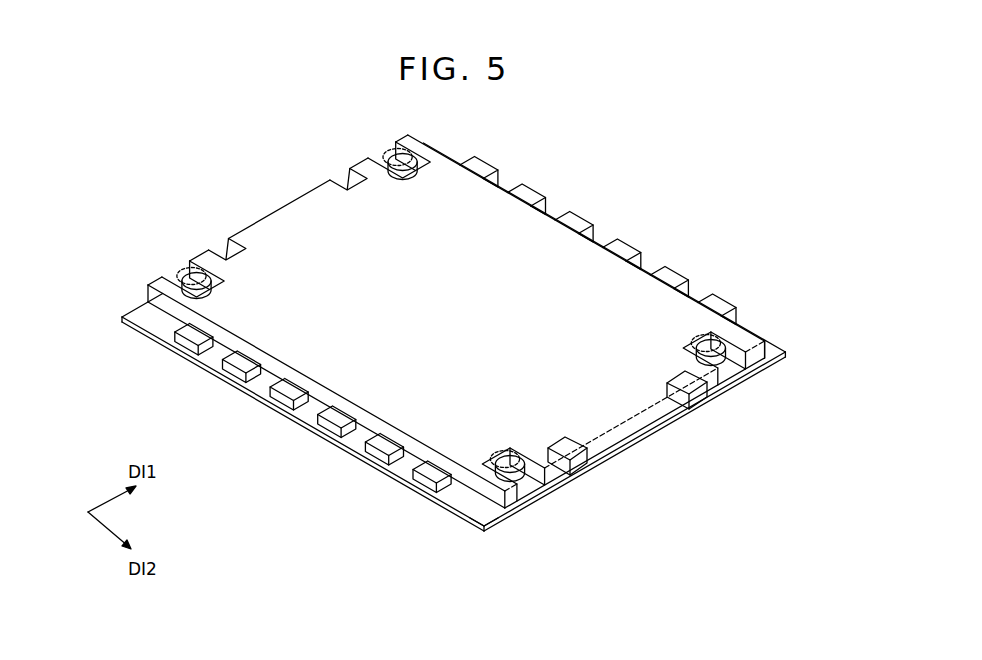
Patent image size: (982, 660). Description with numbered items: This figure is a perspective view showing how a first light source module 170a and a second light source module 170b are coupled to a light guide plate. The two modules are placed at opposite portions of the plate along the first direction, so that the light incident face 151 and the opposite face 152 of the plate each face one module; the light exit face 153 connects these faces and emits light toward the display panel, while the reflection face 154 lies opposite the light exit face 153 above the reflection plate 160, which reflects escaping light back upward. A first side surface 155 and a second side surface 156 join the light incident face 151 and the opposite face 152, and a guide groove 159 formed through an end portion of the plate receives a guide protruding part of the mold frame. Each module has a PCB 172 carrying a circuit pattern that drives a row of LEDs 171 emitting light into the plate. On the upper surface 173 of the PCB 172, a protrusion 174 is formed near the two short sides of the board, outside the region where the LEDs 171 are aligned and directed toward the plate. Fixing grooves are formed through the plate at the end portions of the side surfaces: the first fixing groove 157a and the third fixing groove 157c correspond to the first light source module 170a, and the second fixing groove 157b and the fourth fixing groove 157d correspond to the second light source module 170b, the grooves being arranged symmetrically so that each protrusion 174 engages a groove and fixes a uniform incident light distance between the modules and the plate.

The light incident face 151 is at (503, 510).
The opposite face 152 is at (600, 243).
The light exit face 153 is at (610, 303).
The reflection face 154 is at (620, 447).
The first side surface 155 is at (657, 413).
The second side surface 156 is at (273, 212).
The first fixing groove 157a is at (542, 497).
The second fixing groove 157b is at (738, 382).
The third fixing groove 157c is at (182, 268).
The fourth fixing groove 157d is at (381, 155).
The guide groove 159 is at (702, 398).
The reflection plate 160 is at (577, 473).
The first light source module 170a is at (462, 525).
The second light source module 170b is at (773, 367).
The LED 171 is at (190, 342).
The PCB 172 is at (230, 385).
The upper surface 173 is at (312, 417).
The protrusion 174 is at (515, 456).